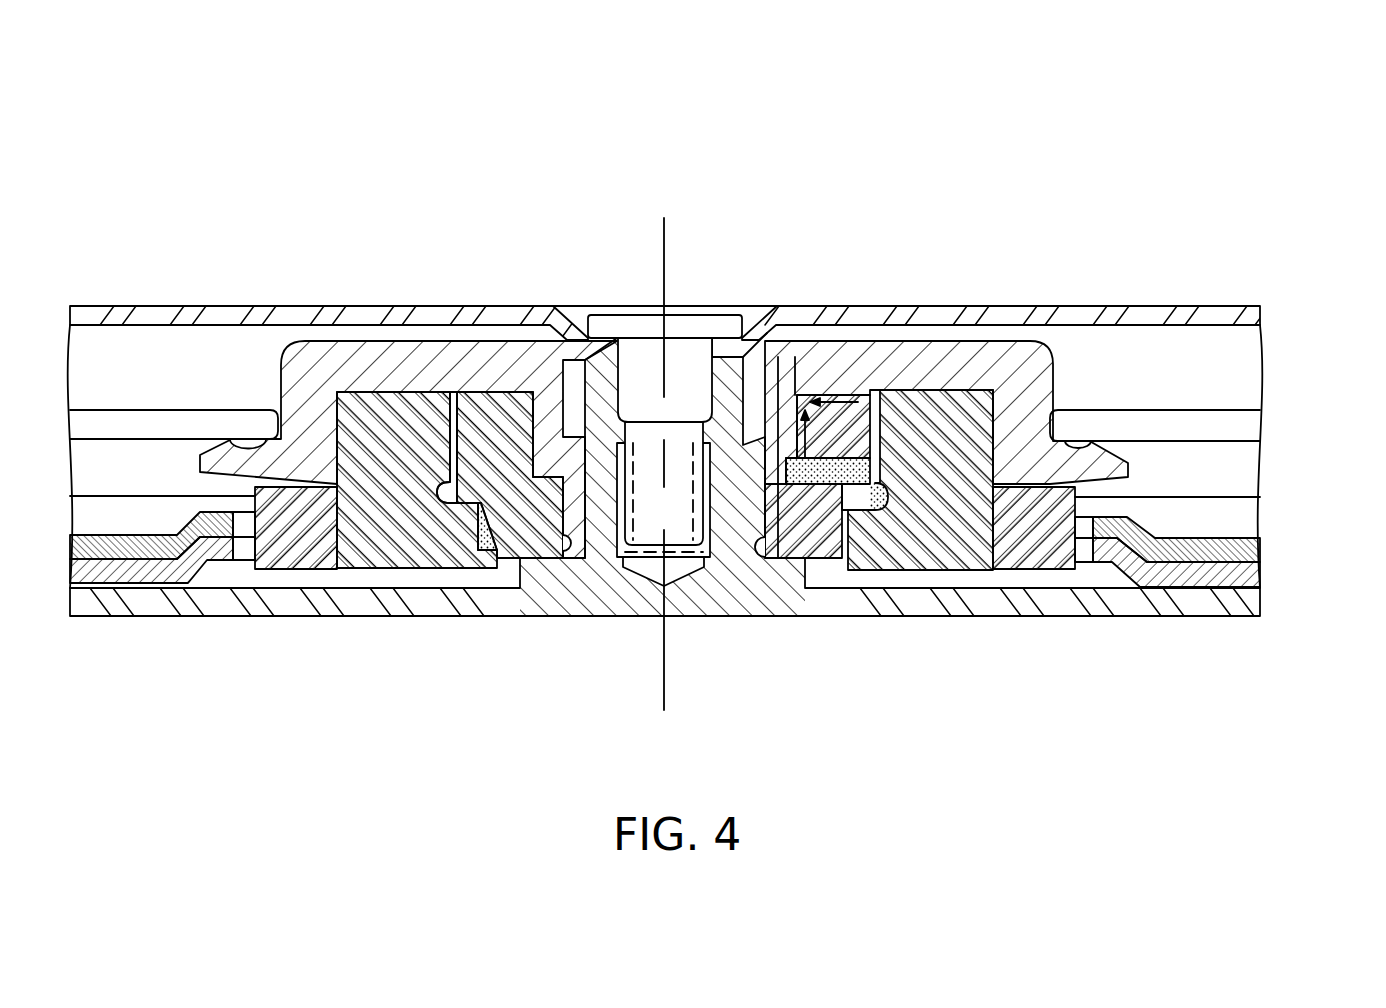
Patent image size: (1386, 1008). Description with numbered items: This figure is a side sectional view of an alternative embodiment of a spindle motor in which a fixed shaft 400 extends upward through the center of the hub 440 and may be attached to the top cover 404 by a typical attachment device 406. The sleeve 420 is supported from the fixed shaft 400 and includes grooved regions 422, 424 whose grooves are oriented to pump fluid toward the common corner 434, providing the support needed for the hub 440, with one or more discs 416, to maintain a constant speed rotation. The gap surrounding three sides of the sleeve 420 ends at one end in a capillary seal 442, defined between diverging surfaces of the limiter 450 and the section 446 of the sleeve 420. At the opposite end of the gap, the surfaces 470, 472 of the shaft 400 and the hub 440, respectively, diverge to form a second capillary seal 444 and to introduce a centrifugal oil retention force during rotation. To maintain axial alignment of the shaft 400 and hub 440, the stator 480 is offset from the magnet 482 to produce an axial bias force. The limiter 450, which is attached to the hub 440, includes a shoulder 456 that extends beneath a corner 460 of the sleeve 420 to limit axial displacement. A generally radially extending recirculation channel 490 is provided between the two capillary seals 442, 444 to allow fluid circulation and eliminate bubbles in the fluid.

The fixed shaft 400 is at (643, 602).
The top cover 404 is at (968, 322).
The attachment device 406 is at (678, 370).
The disc 416 is at (1200, 427).
The sleeve 420 is at (497, 422).
The grooved region 422 is at (752, 440).
The grooved region 424 is at (853, 390).
The common corner 434 is at (795, 388).
The hub 440 is at (1007, 370).
The capillary seal 442 is at (493, 550).
The capillary seal 444 is at (568, 455).
The section of the sleeve 446 is at (563, 555).
The limiter 450 is at (368, 525).
The shoulder 456 is at (473, 506).
The corner of the sleeve 460 is at (440, 503).
The surface of the shaft 470 is at (755, 440).
The surface of the hub 472 is at (783, 510).
The stator 480 is at (133, 572).
The magnet 482 is at (262, 555).
The recirculation channel 490 is at (822, 478).